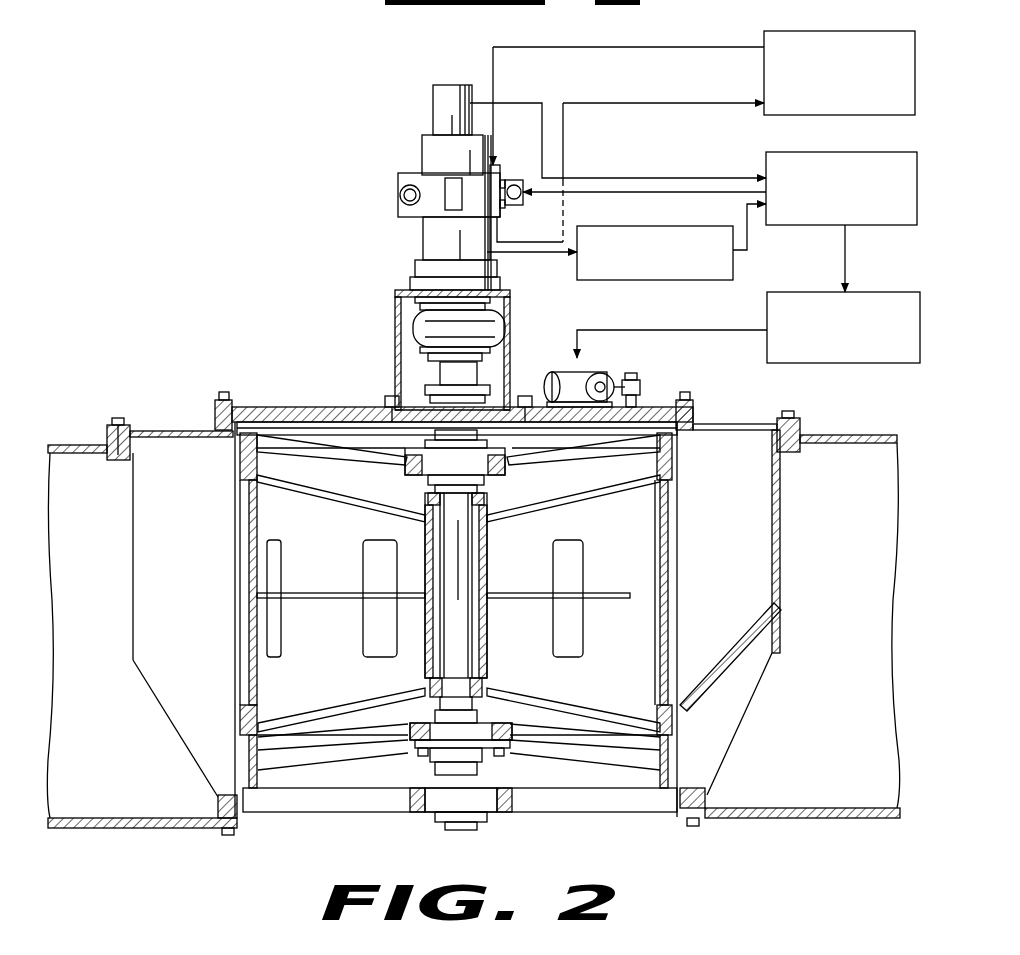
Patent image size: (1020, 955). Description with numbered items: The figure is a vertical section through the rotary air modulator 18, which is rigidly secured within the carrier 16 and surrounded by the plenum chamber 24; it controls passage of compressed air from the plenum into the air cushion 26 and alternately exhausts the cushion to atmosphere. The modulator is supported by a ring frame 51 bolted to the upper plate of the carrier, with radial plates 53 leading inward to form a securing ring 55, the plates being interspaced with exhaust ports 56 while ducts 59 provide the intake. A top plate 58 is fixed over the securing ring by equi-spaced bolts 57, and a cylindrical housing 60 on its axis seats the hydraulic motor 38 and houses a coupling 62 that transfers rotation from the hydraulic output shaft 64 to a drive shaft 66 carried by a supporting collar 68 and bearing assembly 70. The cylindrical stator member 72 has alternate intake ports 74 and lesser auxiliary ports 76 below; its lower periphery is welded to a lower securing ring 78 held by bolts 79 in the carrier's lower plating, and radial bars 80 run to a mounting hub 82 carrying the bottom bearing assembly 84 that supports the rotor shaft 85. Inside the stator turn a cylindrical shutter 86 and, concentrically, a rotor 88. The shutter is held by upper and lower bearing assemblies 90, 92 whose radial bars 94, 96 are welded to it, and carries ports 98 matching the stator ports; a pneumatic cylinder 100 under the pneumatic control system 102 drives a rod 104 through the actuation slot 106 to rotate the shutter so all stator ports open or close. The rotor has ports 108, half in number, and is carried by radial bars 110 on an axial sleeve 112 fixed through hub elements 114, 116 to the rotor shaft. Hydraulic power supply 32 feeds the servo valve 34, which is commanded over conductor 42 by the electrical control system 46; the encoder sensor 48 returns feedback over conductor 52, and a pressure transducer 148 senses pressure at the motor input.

The carrier 16 is at (96, 445).
The rotary air modulator 18 is at (330, 335).
The plenum chamber 24 is at (464, 625).
The air cushion 26 is at (463, 851).
The hydraulic power supply 32 is at (830, 31).
The servo valve 34 is at (503, 214).
The hydraulic motor 38 is at (428, 142).
The conductor 42 is at (625, 193).
The electrical control system 46 is at (841, 152).
The encoder sensor 48 is at (433, 97).
The ring frame 51 is at (120, 425).
The conductor 52 is at (594, 178).
The radial plates 53 is at (168, 431).
The securing ring 55 is at (215, 405).
The exhaust ports 56 is at (718, 510).
The bolts 57 is at (300, 407).
The top plate 58 is at (308, 412).
The ducts 59 is at (162, 523).
The cylindrical housing 60 is at (398, 305).
The coupling 62 is at (462, 323).
The hydraulic output shaft 64 is at (458, 299).
The drive shaft 66 is at (452, 357).
The supporting collar 68 is at (462, 374).
The bearing assembly 70 is at (440, 403).
The cylindrical stator member 72 is at (240, 715).
The intake ports 74 is at (236, 490).
The auxiliary ports 76 is at (249, 745).
The lower securing ring 78 is at (218, 803).
The bolts 79 is at (228, 835).
The radial bars 80 is at (322, 812).
The mounting hub 82 is at (420, 812).
The bottom bearing assembly 84 is at (480, 810).
The rotor shaft 85 is at (456, 586).
The cylindrical shutter 86 is at (250, 758).
The rotor 88 is at (249, 583).
The upper bearing assembly 90 is at (468, 472).
The lower bearing assembly 92 is at (470, 735).
The radial bars 94 is at (580, 457).
The radial bars 96 is at (566, 750).
The shutter ports 98 is at (240, 625).
The pneumatic cylinder 100 is at (578, 380).
The pneumatic control system 102 is at (818, 292).
The rod 104 is at (640, 395).
The actuation slot 106 is at (690, 398).
The rotor ports 108 is at (583, 581).
The radial bars 110 is at (572, 497).
The axial sleeve 112 is at (487, 621).
The hub element 114 is at (430, 500).
The hub element 116 is at (482, 691).
The pressure transducer 148 is at (648, 278).